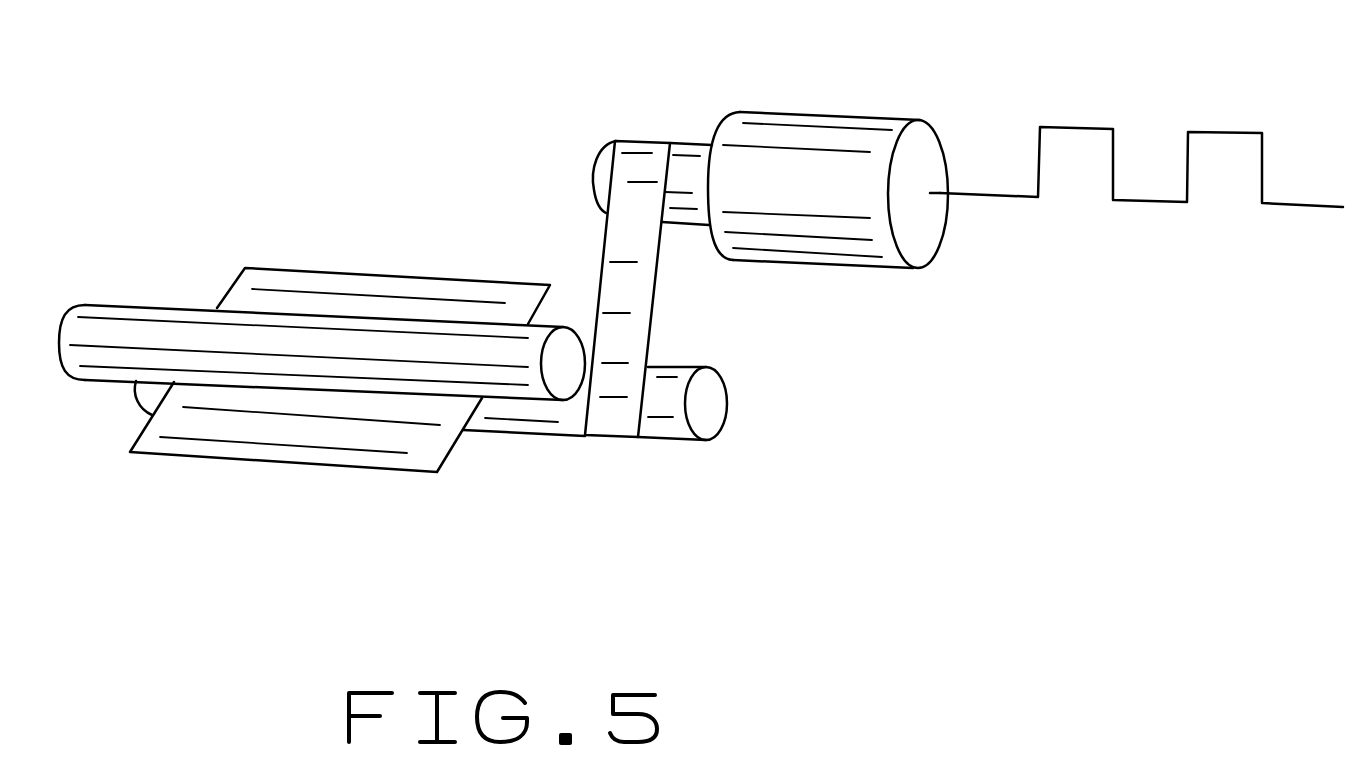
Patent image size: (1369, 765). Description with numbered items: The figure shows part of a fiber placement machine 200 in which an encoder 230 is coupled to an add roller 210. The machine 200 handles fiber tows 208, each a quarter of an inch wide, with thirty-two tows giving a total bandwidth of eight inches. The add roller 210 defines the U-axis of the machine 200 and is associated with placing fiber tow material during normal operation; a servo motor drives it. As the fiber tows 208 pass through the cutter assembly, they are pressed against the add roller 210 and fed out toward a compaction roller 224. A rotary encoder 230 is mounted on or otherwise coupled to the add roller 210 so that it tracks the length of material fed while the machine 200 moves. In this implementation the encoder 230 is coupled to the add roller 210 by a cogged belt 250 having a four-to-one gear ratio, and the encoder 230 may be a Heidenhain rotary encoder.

The material placement machine 200 is at (935, 533).
The fiber tows 208 is at (322, 272).
The add roller 210 is at (725, 395).
The compaction roller 224 is at (148, 305).
The encoder 230 is at (825, 112).
The cogged belt 250 is at (598, 253).